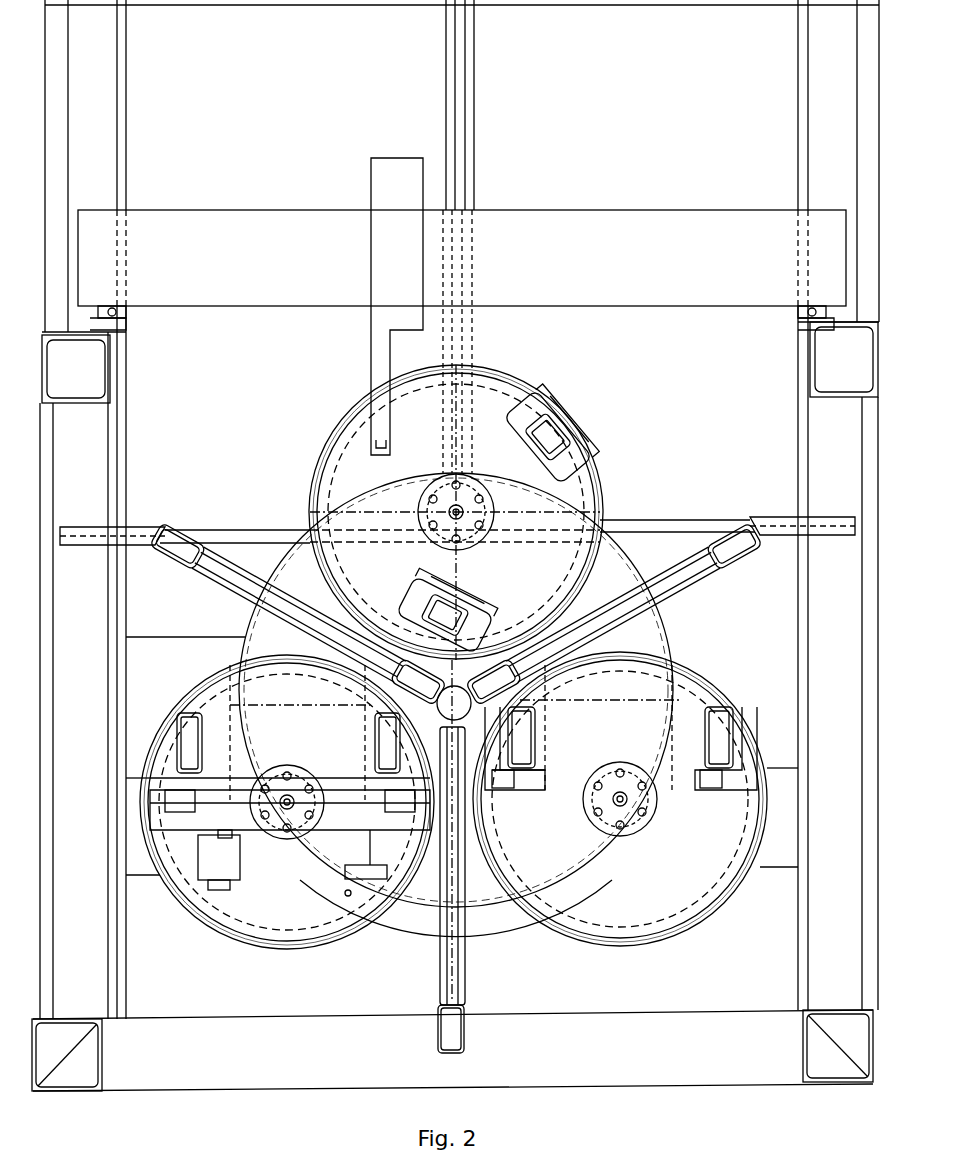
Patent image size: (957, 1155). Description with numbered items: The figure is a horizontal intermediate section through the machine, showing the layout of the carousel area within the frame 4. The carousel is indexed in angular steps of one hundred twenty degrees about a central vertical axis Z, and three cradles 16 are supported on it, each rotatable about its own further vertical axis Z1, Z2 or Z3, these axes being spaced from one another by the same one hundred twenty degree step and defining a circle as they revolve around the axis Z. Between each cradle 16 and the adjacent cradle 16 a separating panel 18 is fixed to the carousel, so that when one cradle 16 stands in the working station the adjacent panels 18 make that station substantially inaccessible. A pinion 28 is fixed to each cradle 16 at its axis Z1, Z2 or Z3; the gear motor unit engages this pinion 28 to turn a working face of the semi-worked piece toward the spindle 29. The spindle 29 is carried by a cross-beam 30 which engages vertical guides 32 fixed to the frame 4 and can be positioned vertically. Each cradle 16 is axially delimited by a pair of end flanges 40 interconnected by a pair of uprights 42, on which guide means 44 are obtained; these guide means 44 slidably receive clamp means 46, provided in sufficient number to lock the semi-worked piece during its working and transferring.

The frame 4 is at (50, 8).
The cradle 16 is at (296, 452).
The separating panel 18 is at (183, 550).
The pinion 28 is at (418, 512).
The spindle 29 is at (370, 385).
The cross-beam 30 is at (655, 290).
The vertical guides 32 is at (116, 318).
The end flanges 40 is at (592, 515).
The uprights 42 is at (563, 448).
The guide means 44 is at (525, 440).
The clamp means 46 is at (348, 900).
The vertical axis Z is at (508, 818).
The further vertical axis Z1 is at (620, 802).
The further vertical axis Z2 is at (456, 512).
The further vertical axis Z3 is at (287, 802).